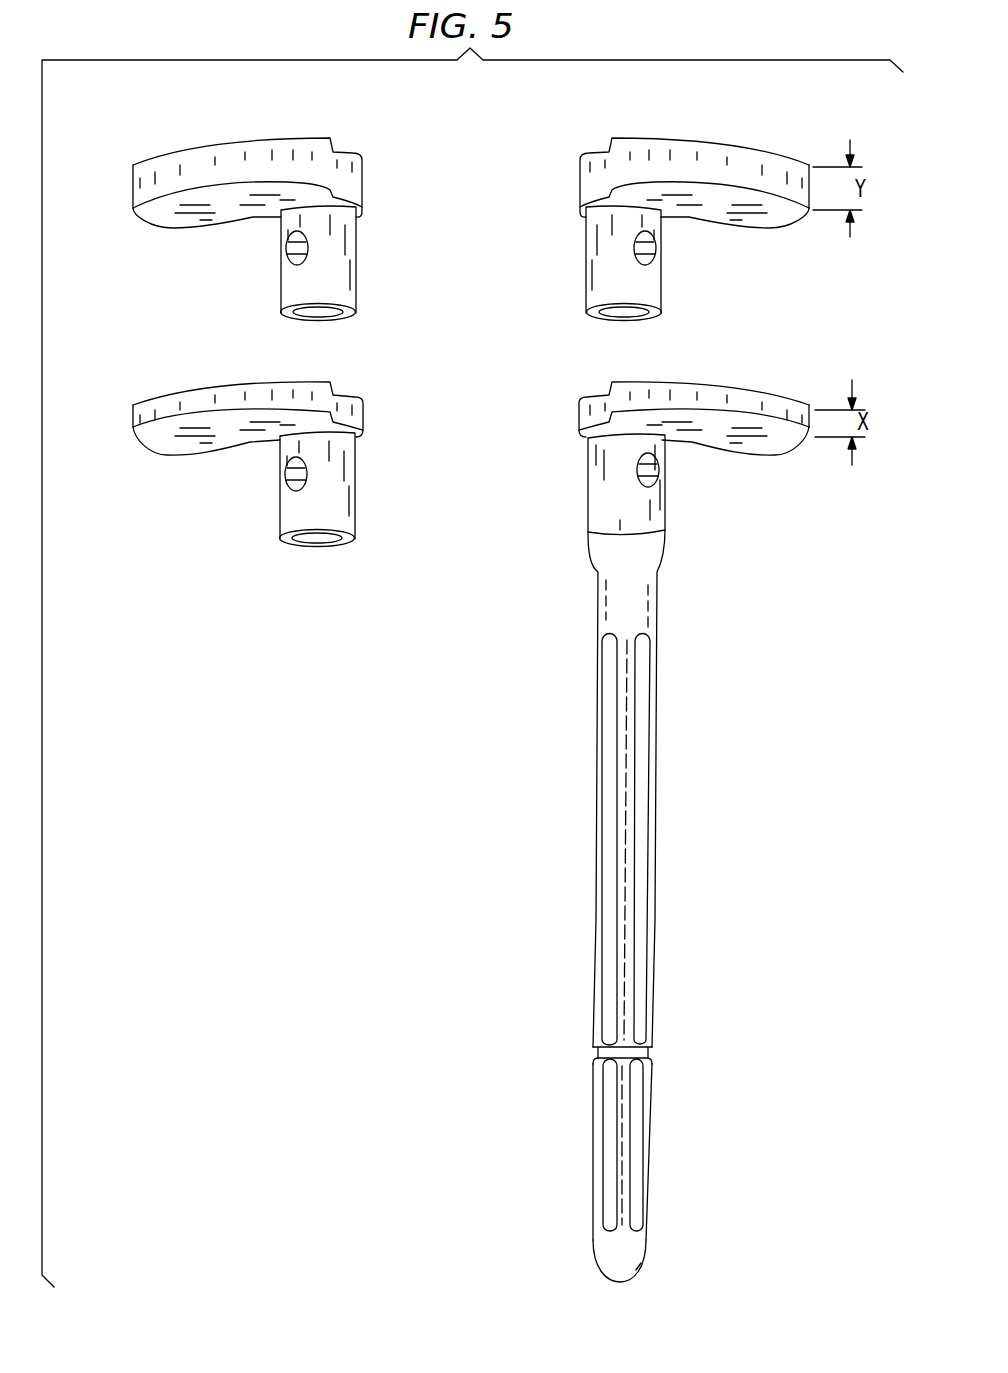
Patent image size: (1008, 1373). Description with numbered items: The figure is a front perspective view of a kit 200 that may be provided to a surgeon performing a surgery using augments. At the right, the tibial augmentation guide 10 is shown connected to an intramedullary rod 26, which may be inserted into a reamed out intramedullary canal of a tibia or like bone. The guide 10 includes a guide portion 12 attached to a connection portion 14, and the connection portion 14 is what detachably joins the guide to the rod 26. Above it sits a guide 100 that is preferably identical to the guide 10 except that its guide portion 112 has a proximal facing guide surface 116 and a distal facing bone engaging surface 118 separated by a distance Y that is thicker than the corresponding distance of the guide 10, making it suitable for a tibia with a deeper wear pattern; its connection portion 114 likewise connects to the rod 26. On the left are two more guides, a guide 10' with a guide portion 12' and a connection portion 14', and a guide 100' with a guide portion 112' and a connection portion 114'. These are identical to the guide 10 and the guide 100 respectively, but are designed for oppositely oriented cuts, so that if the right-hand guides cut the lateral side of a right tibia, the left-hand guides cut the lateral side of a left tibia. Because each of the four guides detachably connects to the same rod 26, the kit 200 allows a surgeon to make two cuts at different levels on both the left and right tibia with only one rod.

The guide 100' is at (236, 170).
The guide portion 112' is at (247, 147).
The connection portion 114' is at (279, 263).
The guide 10' is at (233, 401).
The guide portion 12' is at (248, 390).
The connection portion 14' is at (338, 517).
The guide 100 is at (704, 158).
The guide portion 112 is at (694, 145).
The guide surface 116 is at (663, 133).
The bone engaging surface 118 is at (703, 213).
The connection portion 114 is at (587, 263).
The tibial augmentation guide 10 is at (709, 389).
The guide portion 12 is at (694, 395).
The connection portion 14 is at (588, 484).
The intramedullary rod 26 is at (628, 775).
The kit 200 is at (258, 884).